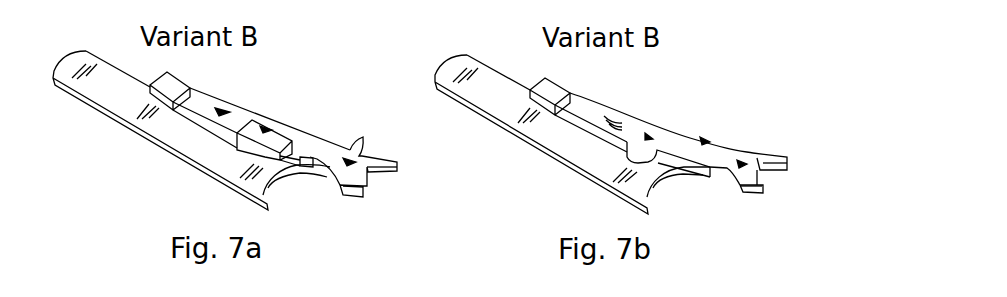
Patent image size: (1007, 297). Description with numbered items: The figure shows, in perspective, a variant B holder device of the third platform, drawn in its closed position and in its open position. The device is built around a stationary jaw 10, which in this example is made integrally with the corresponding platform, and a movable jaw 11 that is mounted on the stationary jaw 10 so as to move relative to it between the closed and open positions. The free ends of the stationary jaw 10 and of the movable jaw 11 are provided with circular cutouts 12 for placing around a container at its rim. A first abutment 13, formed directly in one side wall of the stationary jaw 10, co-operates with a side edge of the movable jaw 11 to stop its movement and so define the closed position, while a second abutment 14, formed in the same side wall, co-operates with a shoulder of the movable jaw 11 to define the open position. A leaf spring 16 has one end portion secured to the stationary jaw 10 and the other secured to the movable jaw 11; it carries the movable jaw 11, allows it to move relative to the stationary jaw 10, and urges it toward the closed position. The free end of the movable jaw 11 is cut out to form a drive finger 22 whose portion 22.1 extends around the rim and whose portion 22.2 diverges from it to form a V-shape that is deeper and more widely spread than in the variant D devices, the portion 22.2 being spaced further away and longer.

In FIG. 7A, the stationary jaw 10 is at (162, 131).
In FIG. 7B, the stationary jaw 10 is at (510, 116).
In FIG. 7A, the movable jaw 11 is at (312, 150).
In FIG. 7B, the movable jaw 11 is at (755, 157).
In FIG. 7A, the circular cutouts 12 is at (358, 141).
In FIG. 7A, the first abutment 13 is at (270, 150).
In FIG. 7A, the second abutment 14 is at (265, 172).
In FIG. 7A, the leaf spring 16 is at (233, 111).
In FIG. 7A, the drive finger 22 is at (373, 199).
In FIG. 7B, the drive finger 22 is at (769, 197).
In FIG. 7A, the portion 22.1 is at (365, 187).
In FIG. 7B, the portion 22.1 is at (765, 187).
In FIG. 7A, the portion 22.2 is at (397, 173).
In FIG. 7B, the portion 22.2 is at (778, 173).